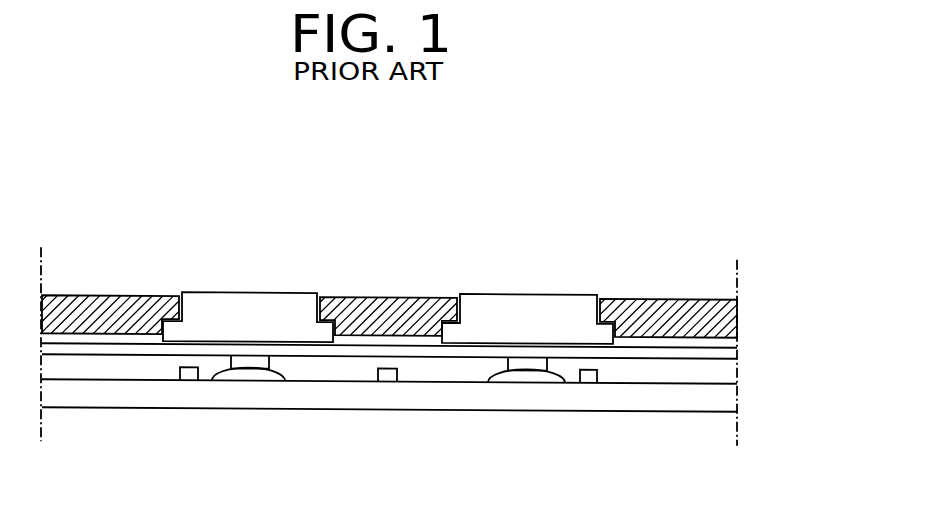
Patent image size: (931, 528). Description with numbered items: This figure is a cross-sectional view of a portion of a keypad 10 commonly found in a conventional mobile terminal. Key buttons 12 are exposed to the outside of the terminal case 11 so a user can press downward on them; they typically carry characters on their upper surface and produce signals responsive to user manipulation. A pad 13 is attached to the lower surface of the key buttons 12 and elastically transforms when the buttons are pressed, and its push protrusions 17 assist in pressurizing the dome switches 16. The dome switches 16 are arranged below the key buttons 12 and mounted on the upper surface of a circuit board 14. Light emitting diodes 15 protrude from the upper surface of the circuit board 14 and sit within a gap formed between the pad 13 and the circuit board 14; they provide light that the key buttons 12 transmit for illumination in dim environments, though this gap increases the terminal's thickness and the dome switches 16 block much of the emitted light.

The keypad 10 is at (697, 263).
The terminal case 11 is at (112, 312).
The key buttons 12 is at (495, 318).
The pad 13 is at (643, 353).
The circuit board 14 is at (648, 395).
The light emitting diodes (LEDs) 15 is at (188, 381).
The dome switches 16 is at (265, 372).
The push protrusions 17 is at (238, 362).